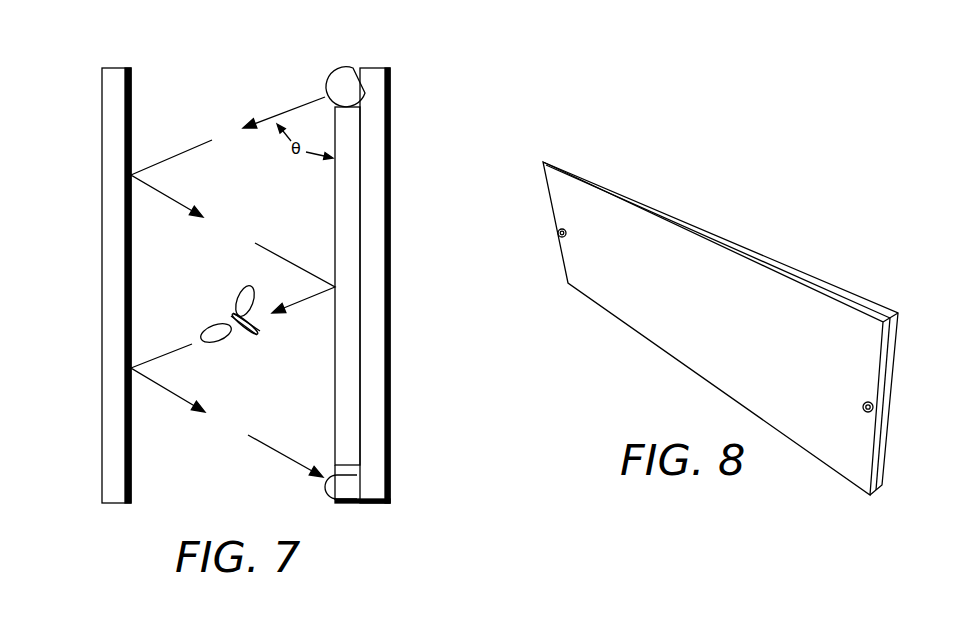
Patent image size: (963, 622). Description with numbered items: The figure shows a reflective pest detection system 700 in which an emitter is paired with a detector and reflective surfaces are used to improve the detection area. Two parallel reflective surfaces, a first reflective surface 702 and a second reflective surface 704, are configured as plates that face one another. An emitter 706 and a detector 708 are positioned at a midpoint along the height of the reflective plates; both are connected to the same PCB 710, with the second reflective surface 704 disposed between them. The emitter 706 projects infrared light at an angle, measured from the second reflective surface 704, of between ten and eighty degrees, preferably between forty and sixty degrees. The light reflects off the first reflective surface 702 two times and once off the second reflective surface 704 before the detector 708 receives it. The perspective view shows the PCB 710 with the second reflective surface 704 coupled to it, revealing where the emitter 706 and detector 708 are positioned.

In FIG. 7, the pest detection system 700 is at (422, 92).
In FIG. 7, the first reflective surface 702 is at (107, 240).
In FIG. 7, the second reflective surface 704 is at (353, 228).
In FIG. 8, the second reflective surface 704 is at (675, 342).
In FIG. 7, the emitter 706 is at (343, 82).
In FIG. 8, the emitter 706 is at (565, 230).
In FIG. 7, the detector 708 is at (353, 487).
In FIG. 8, the detector 708 is at (865, 402).
In FIG. 7, the PCB 710 is at (378, 353).
In FIG. 8, the PCB 710 is at (678, 217).